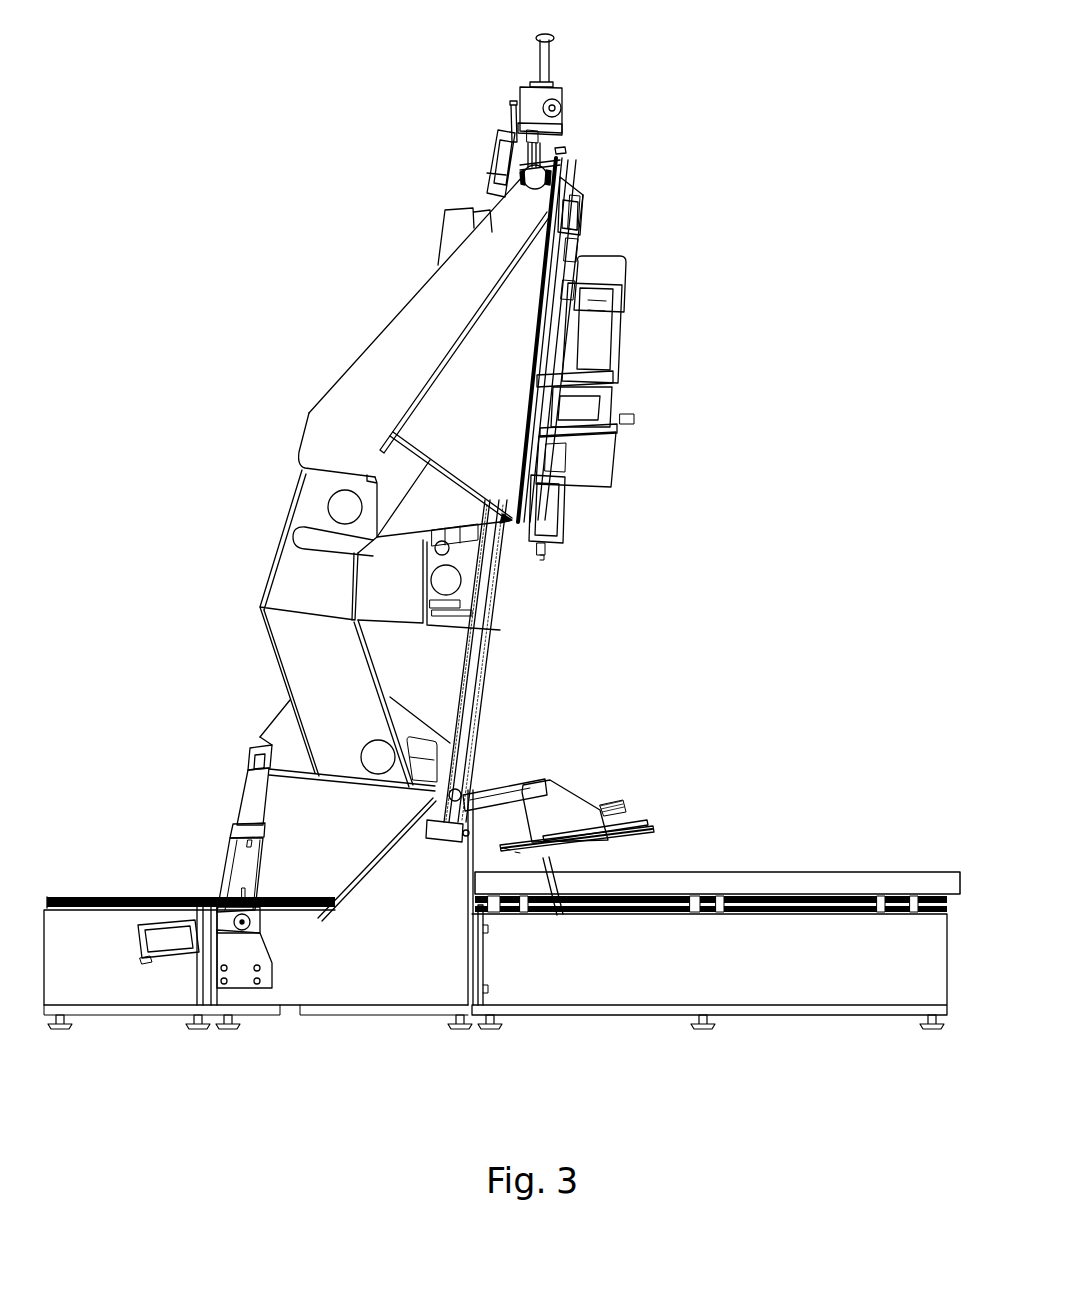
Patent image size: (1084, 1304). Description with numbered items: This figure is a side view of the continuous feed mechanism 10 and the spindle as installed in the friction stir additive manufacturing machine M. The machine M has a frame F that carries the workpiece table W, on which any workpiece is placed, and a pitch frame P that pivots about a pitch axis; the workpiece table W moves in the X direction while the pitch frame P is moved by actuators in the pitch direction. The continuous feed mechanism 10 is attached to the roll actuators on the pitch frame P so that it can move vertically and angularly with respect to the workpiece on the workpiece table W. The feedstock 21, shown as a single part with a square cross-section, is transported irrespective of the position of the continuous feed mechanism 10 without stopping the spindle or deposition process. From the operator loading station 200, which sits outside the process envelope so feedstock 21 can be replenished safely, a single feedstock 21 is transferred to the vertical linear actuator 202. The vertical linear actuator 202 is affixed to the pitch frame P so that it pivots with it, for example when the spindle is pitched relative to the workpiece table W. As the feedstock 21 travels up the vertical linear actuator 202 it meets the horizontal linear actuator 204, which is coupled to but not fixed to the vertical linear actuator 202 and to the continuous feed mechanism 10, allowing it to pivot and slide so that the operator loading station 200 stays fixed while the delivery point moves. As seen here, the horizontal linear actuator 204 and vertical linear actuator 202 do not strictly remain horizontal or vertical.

The friction stir additive manufacturing machine M is at (848, 140).
The continuous feed mechanism 10 is at (590, 168).
The horizontal linear actuator 204 is at (578, 250).
The vertical linear actuator 202 is at (500, 638).
The operator loading station 200 is at (610, 762).
The feedstock 21 is at (632, 805).
The pitch frame P is at (307, 640).
The workpiece table W is at (866, 872).
The frame F is at (603, 985).